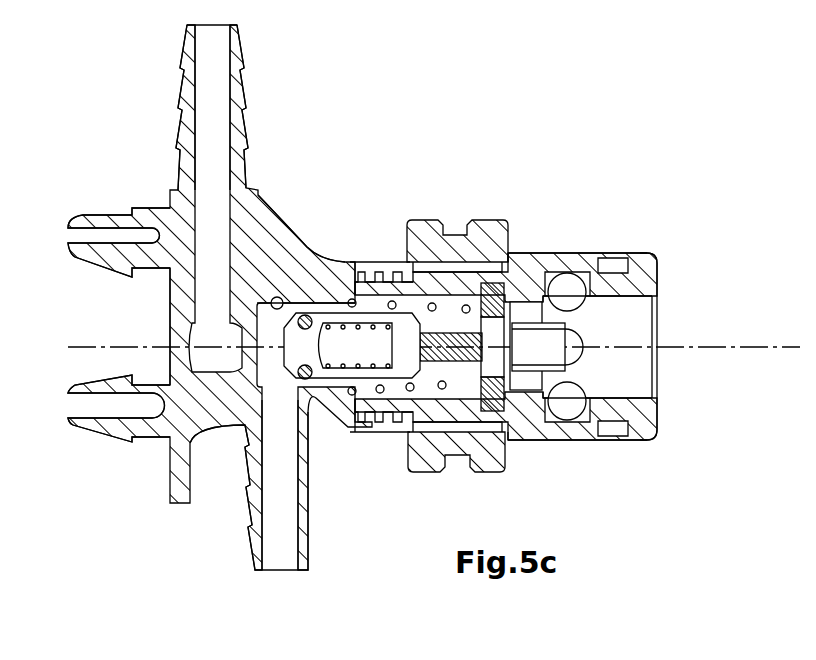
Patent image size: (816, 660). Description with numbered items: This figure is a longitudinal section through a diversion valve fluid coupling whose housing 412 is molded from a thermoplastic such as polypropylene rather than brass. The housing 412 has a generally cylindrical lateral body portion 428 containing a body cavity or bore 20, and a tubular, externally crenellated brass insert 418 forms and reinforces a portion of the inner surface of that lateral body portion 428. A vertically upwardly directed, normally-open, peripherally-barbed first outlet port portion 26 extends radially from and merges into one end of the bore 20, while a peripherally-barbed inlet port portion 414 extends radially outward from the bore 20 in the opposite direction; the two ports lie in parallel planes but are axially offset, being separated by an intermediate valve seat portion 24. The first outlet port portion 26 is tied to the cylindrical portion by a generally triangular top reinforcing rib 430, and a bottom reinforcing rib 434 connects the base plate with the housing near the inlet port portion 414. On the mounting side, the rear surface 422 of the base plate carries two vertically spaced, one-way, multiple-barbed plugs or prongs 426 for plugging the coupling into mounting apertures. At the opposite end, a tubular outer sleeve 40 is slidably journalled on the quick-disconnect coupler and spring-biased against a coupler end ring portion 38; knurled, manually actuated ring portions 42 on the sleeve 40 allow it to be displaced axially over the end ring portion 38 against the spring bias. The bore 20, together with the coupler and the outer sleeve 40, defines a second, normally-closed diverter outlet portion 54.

The housing bore 20 is at (281, 298).
The intermediate valve seat portion 24 is at (247, 407).
The first outlet port portion 26 is at (237, 60).
The coupler end ring portion 38 is at (643, 257).
The tubular outer sleeve 40 is at (542, 268).
The actuating ring portions 42 is at (481, 221).
The normally-closed diverter outlet portion 54 is at (624, 330).
The housing 412 is at (502, 337).
The inlet port portion 414 is at (253, 538).
The externally crenellated brass insert 418 is at (377, 422).
The rear surface 422 is at (170, 318).
The barbed plugs or prongs 426 is at (115, 223).
The lateral body portion 428 is at (390, 423).
The top reinforcing rib 430 is at (267, 228).
The bottom reinforcing rib 434 is at (198, 445).